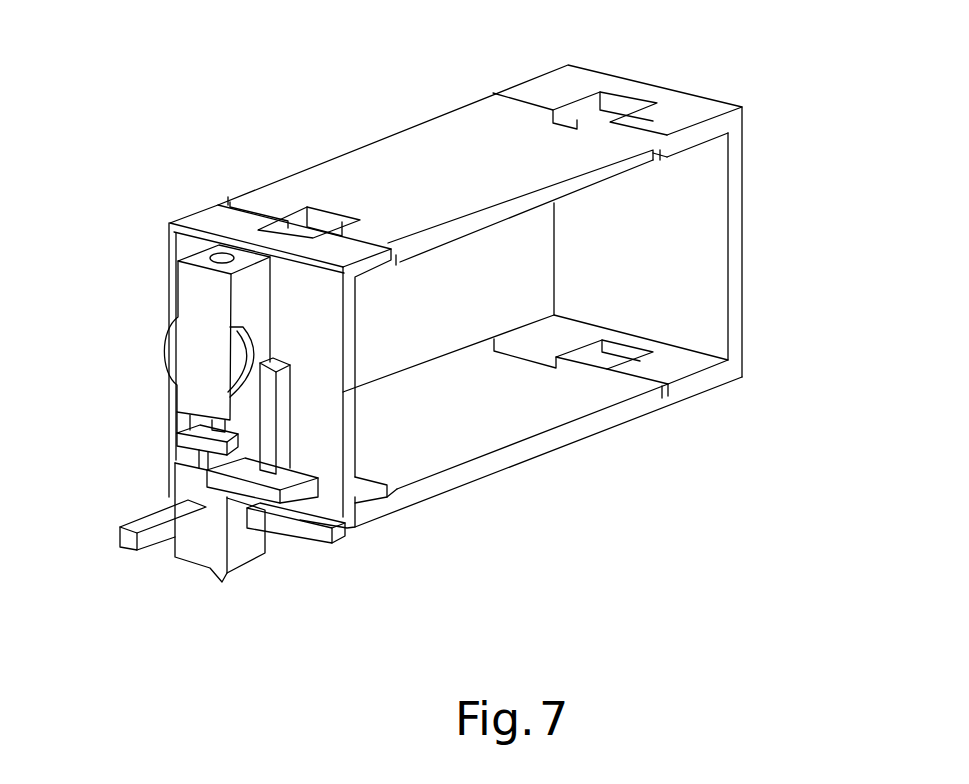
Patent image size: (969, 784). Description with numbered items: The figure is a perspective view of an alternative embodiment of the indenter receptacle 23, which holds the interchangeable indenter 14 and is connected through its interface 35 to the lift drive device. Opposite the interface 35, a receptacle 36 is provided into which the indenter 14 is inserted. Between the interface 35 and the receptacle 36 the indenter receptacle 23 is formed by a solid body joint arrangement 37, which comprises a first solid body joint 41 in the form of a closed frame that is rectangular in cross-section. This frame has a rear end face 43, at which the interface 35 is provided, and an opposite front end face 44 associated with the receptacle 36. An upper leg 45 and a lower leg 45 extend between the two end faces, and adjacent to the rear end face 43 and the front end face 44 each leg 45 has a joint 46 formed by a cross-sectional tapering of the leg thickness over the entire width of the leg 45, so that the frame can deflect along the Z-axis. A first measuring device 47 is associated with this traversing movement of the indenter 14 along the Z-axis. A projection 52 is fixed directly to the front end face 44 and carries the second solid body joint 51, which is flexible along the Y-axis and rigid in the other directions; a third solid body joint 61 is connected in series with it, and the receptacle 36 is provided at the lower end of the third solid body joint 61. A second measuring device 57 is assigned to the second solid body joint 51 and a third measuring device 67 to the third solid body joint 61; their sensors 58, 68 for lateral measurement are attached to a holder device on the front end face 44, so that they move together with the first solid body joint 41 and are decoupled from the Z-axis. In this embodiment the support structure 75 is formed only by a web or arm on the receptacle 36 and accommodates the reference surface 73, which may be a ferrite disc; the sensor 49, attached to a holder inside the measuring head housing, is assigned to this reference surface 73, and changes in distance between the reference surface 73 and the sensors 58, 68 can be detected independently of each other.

The indenter receptacle 23 is at (372, 110).
The interface 35 is at (762, 150).
The solid body joint arrangement 37 is at (531, 503).
The rear end face 43 is at (737, 270).
The front end face 44 is at (347, 309).
The first solid body joint 41 is at (590, 466).
The leg 45 is at (610, 172).
The joint 46 is at (228, 195).
The first measuring device 47 is at (300, 410).
The sensor 49 is at (283, 383).
The projection 52 is at (185, 347).
The second solid body joint 51 is at (178, 422).
The third solid body joint 61 is at (178, 452).
The reference surface 73 is at (330, 468).
The receptacle 36 is at (202, 574).
The sensor 58 is at (130, 522).
The sensor 68 is at (325, 535).
The second measuring device 57 is at (158, 560).
The indenter 14 is at (223, 588).
The support structure 75 is at (225, 492).
The third measuring device 67 is at (284, 556).